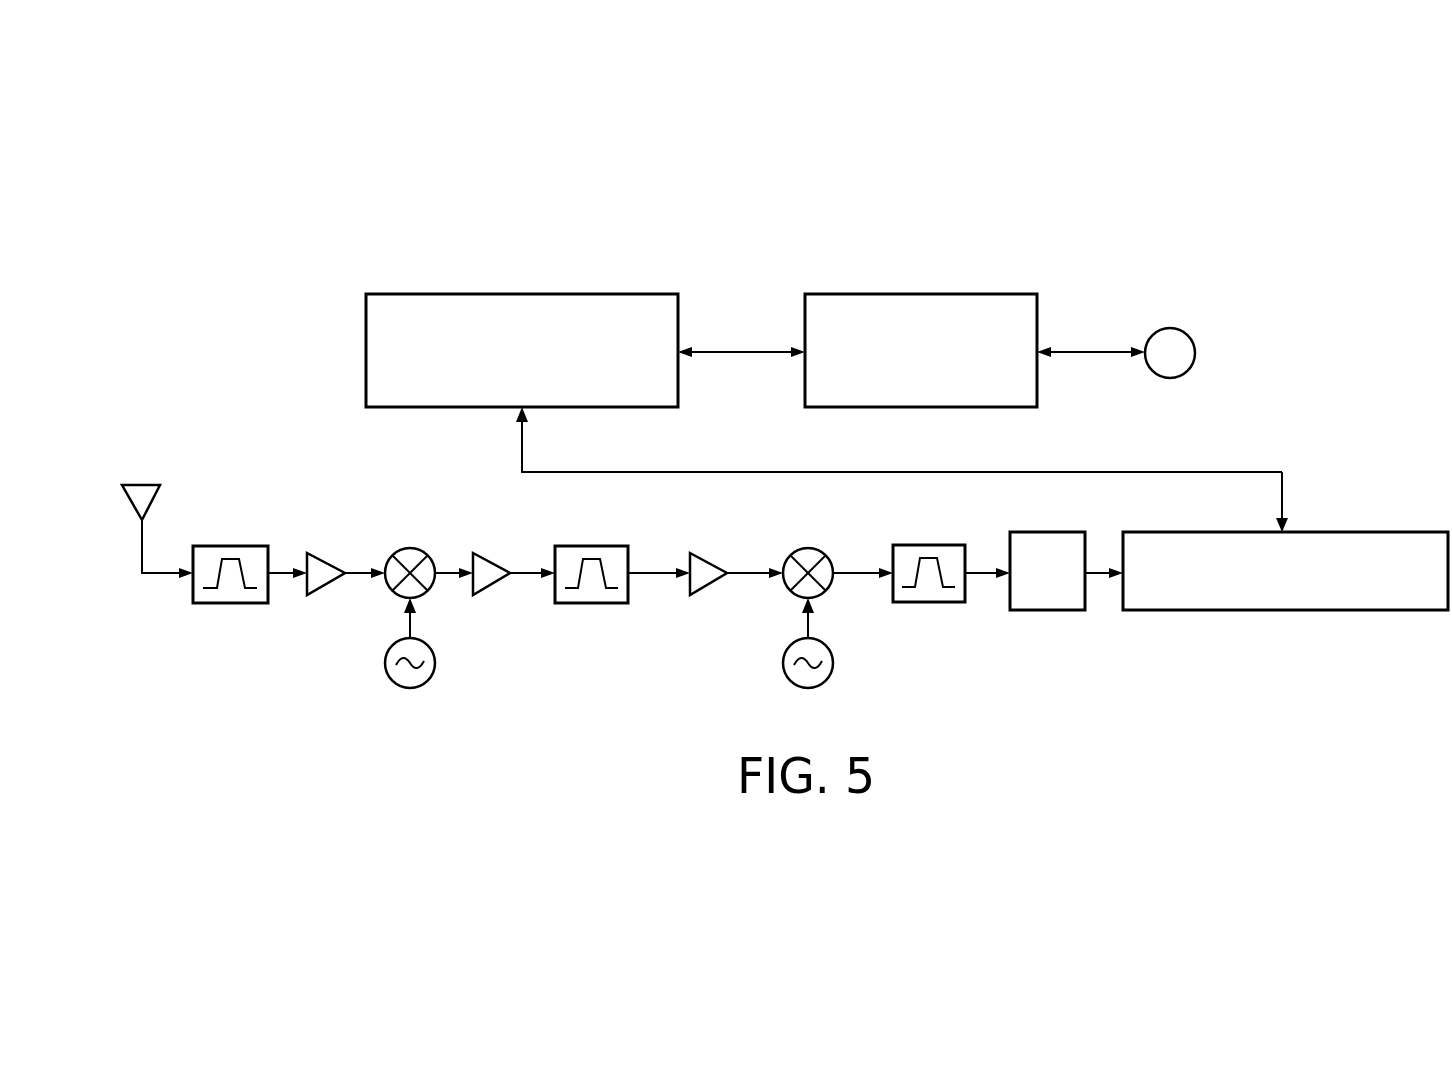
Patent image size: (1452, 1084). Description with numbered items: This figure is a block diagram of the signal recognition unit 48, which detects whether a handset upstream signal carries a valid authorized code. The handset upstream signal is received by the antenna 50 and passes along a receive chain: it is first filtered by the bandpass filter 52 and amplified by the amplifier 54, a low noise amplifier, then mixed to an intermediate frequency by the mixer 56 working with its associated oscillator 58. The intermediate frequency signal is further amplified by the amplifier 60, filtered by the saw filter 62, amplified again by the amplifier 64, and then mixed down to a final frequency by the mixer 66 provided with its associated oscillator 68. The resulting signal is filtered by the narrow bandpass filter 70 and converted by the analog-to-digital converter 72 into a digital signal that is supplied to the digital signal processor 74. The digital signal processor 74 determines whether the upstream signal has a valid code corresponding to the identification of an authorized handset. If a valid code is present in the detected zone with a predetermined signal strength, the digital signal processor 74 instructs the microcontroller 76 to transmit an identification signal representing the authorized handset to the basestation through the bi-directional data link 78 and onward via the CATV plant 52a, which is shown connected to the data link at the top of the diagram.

The signal recognition unit 48 is at (252, 345).
The antenna 50 is at (160, 494).
The bandpass filter 52 is at (230, 606).
The CATV plant 52a is at (1185, 373).
The amplifier 54 is at (323, 553).
The mixer 56 is at (415, 548).
The oscillator 58 is at (385, 663).
The amplifier 60 is at (490, 553).
The saw filter 62 is at (603, 545).
The amplifier 64 is at (707, 553).
The mixer 66 is at (808, 548).
The oscillator 68 is at (783, 663).
The narrow bandpass filter 70 is at (921, 543).
The analog-to-digital converter 72 is at (1058, 532).
The digital signal processor 74 is at (1195, 532).
The microcontroller 76 is at (437, 408).
The bi-directional data link 78 is at (870, 408).